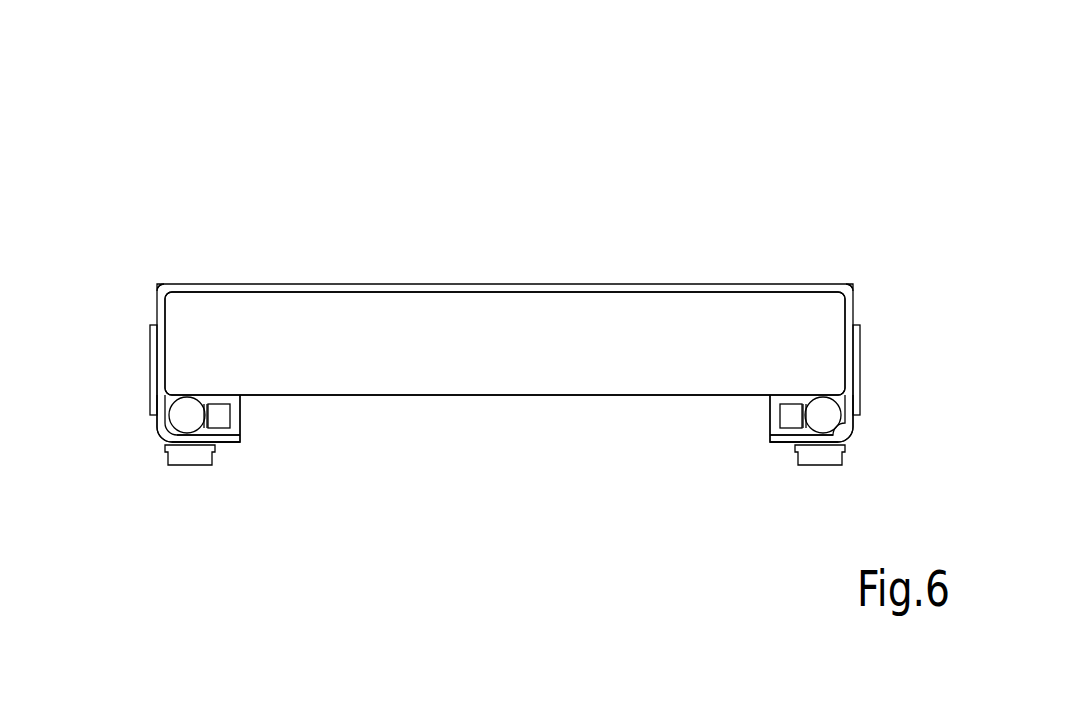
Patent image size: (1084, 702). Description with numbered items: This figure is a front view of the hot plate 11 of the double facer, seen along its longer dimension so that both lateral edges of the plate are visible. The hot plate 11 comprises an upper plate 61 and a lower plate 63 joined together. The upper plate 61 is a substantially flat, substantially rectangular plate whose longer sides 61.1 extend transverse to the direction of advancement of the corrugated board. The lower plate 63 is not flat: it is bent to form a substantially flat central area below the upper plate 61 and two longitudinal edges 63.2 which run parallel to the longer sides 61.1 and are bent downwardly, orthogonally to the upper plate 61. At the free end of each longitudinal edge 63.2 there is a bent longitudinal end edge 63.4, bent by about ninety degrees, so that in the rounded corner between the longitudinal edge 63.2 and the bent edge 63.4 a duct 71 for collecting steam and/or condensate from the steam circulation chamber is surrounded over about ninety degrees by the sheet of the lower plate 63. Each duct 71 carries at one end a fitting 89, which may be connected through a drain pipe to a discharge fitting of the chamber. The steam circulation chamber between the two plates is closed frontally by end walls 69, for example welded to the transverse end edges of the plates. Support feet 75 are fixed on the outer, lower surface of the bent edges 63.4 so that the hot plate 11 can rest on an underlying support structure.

The hot plate 11 is at (176, 147).
The upper plate 61 is at (488, 282).
The longer sides 61.1 is at (157, 290).
The lower plate 63 is at (145, 406).
The longitudinal edges 63.2 is at (160, 367).
The bent longitudinal end edge 63.4 is at (227, 440).
The end walls 69 is at (463, 348).
The duct 71 is at (182, 422).
The support feet 75 is at (188, 453).
The fitting 89 is at (217, 413).